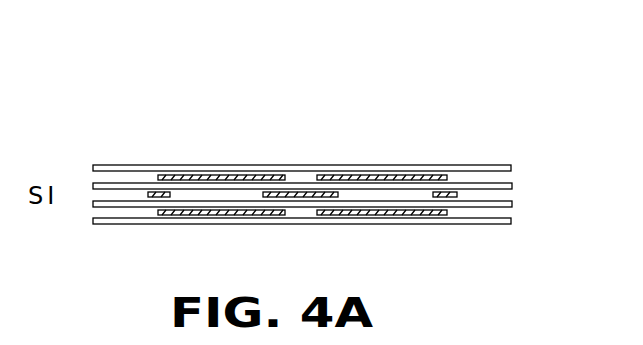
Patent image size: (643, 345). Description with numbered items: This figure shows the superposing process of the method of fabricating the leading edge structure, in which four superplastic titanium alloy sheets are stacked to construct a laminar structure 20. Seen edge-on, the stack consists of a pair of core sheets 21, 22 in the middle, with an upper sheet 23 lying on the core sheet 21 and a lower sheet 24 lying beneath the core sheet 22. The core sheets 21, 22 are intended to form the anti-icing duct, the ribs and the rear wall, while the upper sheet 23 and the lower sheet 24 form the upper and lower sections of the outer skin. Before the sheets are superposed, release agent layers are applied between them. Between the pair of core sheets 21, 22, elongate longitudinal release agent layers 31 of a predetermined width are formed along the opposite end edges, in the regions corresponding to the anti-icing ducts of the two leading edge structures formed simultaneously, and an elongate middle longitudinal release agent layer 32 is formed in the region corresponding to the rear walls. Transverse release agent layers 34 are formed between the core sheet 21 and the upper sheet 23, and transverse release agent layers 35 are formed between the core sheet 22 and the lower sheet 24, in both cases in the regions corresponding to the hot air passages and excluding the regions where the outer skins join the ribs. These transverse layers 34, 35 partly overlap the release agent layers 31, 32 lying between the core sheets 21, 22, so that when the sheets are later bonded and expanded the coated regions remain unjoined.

The laminar structure 20 is at (413, 151).
The core sheet 21 is at (512, 185).
The core sheet 22 is at (512, 206).
The upper sheet 23 is at (500, 165).
The lower sheet 24 is at (505, 225).
The longitudinal release agent layer 31 is at (148, 193).
The middle longitudinal release agent layer 32 is at (300, 193).
The transverse release agent layer 34 is at (202, 176).
The transverse release agent layer 35 is at (217, 217).